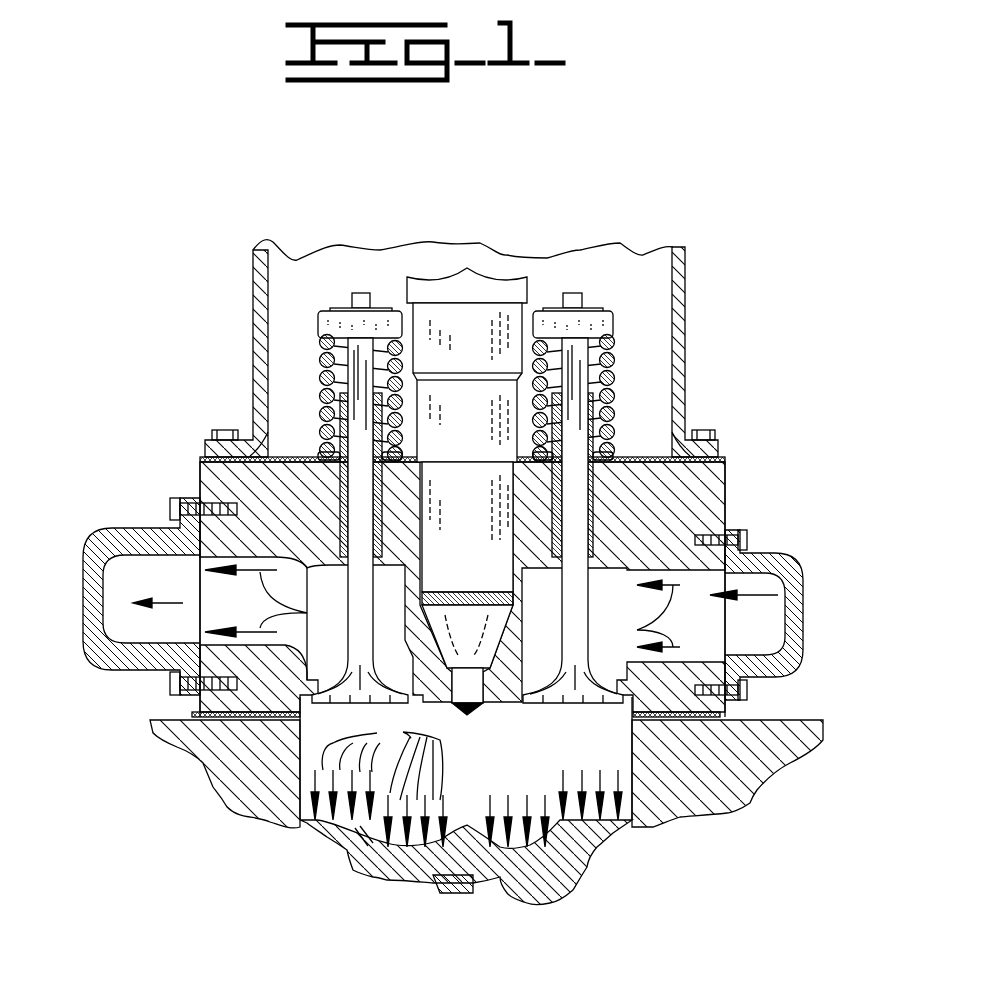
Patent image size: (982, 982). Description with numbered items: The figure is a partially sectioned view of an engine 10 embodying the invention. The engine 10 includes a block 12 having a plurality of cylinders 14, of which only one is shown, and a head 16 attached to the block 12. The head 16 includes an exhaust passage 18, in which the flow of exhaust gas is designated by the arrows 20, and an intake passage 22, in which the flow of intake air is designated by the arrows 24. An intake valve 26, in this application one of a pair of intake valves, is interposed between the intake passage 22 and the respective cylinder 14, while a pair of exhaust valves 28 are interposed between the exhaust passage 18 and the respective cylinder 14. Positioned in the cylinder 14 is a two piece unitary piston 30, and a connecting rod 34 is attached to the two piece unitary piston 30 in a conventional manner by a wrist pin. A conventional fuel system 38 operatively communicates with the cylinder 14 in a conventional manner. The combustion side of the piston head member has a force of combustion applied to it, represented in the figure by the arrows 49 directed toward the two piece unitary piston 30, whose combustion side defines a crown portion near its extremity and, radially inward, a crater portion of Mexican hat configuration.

The engine 10 is at (93, 716).
The block 12 is at (712, 794).
The cylinder 14 is at (485, 761).
The head 16 is at (198, 477).
The exhaust passage 18 is at (255, 614).
The arrows 20 is at (325, 624).
The intake passage 22 is at (718, 627).
The arrows 24 is at (628, 630).
The intake valve 26 is at (562, 612).
The exhaust valves 28 is at (380, 580).
The two piece unitary piston 30 is at (353, 834).
The connecting rod 34 is at (467, 888).
The fuel system 38 is at (480, 415).
The arrows 49 is at (410, 734).